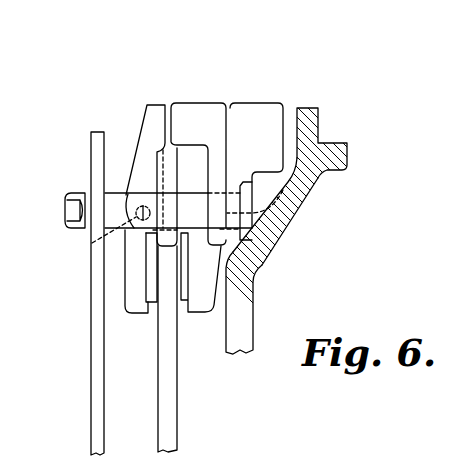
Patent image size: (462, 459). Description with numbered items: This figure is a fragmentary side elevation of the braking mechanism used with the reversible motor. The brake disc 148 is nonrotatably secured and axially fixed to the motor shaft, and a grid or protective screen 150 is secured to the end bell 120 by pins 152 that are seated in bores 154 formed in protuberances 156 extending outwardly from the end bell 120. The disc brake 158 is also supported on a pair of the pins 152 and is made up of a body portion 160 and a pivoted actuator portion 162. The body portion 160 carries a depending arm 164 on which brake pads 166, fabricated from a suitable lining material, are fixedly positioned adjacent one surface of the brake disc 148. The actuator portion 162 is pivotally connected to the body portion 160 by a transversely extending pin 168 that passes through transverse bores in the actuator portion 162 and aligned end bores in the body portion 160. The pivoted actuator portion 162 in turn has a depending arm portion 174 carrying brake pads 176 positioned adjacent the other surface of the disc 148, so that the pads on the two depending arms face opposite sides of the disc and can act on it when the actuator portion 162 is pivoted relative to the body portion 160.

The end bell 120 is at (322, 120).
The brake disc 148 is at (177, 413).
The protective screen 150 is at (90, 336).
The pin 152 is at (118, 193).
The bore 154 is at (266, 253).
The protuberance 156 is at (306, 211).
The disc brake 158 is at (218, 153).
The body portion 160 is at (205, 103).
The actuator portion 162 is at (147, 106).
The depending arm 164 is at (222, 309).
The brake pad 166 is at (183, 303).
The pin 168 is at (92, 246).
The depending arm portion 174 is at (124, 281).
The brake pad 176 is at (152, 303).